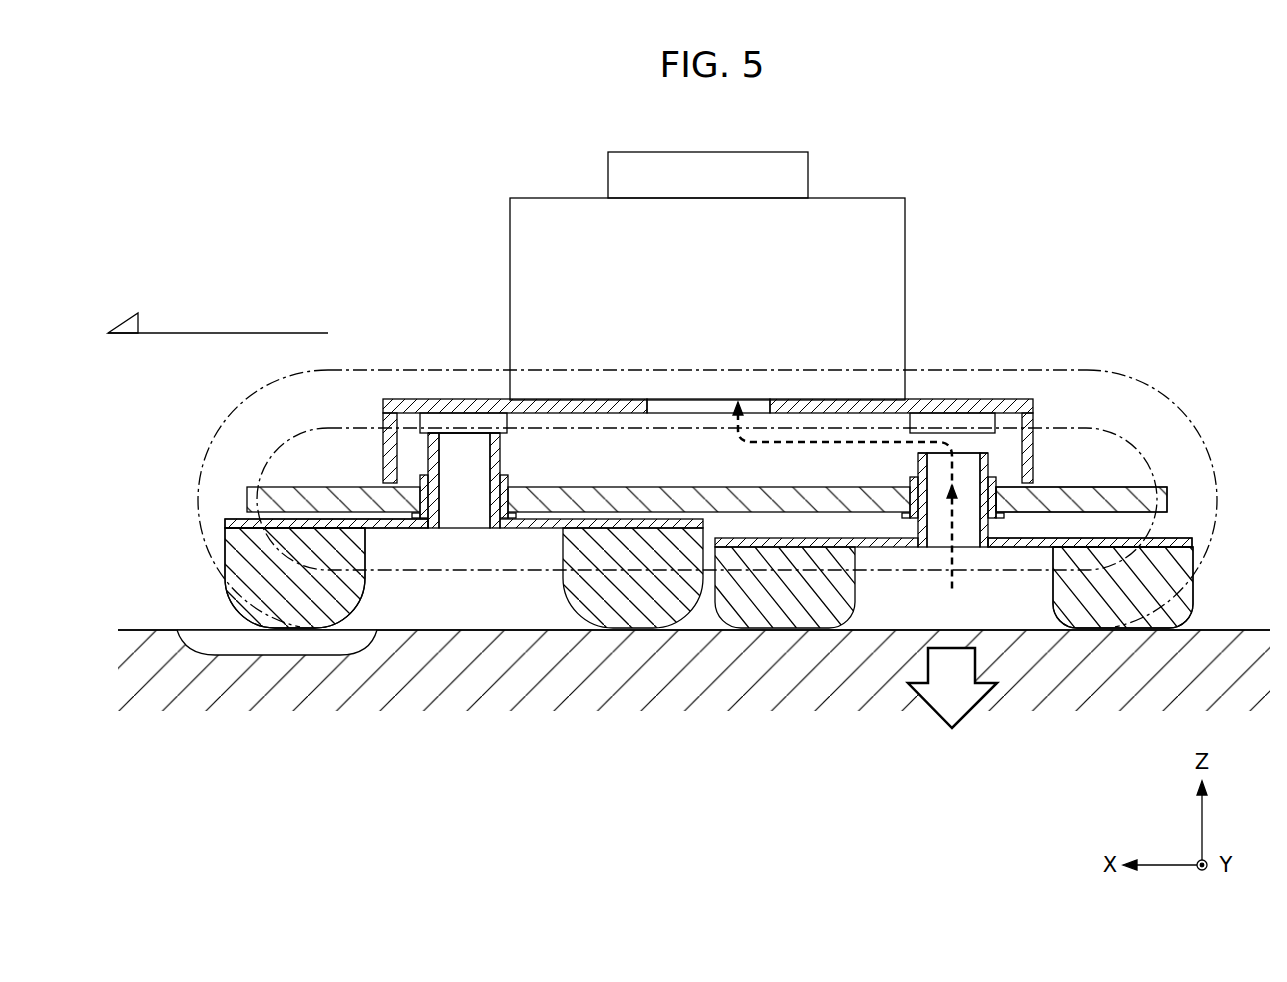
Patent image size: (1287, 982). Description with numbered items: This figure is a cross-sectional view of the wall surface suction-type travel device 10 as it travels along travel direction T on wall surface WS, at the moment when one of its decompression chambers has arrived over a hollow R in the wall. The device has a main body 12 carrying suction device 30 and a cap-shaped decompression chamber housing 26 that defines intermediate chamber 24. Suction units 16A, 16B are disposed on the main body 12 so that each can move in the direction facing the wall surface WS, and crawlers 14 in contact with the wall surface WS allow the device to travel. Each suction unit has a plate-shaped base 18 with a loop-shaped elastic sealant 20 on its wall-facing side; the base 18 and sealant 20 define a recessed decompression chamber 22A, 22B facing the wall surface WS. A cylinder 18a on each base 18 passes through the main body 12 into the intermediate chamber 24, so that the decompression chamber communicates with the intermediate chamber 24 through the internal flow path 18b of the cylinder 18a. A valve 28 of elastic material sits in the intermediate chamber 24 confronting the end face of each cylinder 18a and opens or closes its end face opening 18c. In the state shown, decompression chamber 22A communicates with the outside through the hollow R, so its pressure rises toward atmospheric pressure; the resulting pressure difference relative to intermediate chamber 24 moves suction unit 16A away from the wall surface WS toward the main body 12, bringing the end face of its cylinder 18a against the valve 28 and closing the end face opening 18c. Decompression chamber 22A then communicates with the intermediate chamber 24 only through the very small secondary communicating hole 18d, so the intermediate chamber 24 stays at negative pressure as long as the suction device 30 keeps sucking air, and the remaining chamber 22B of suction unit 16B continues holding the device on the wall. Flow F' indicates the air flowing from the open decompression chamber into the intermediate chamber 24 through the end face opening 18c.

The wall surface suction-type travel device 10 is at (352, 225).
The main body 12 is at (1092, 487).
The crawlers 14 is at (707, 461).
The suction unit 16A is at (228, 520).
The suction unit 16B is at (1193, 541).
The base 18 is at (548, 530).
The cylinder 18a is at (428, 462).
The internal flow path 18b is at (446, 494).
The end face opening 18c is at (447, 424).
The secondary communicating hole 18d is at (500, 455).
The sealant 20 is at (283, 605).
The decompression chamber 22A is at (359, 623).
The decompression chamber 22B is at (1004, 624).
The intermediate chamber 24 is at (781, 473).
The decompression chamber housing 26 is at (1023, 400).
The valve 28 is at (460, 422).
The suction device 30 is at (696, 304).
The travel direction T is at (306, 330).
The wall surface WS is at (170, 628).
The hollow R is at (287, 650).
The flow F' is at (823, 497).